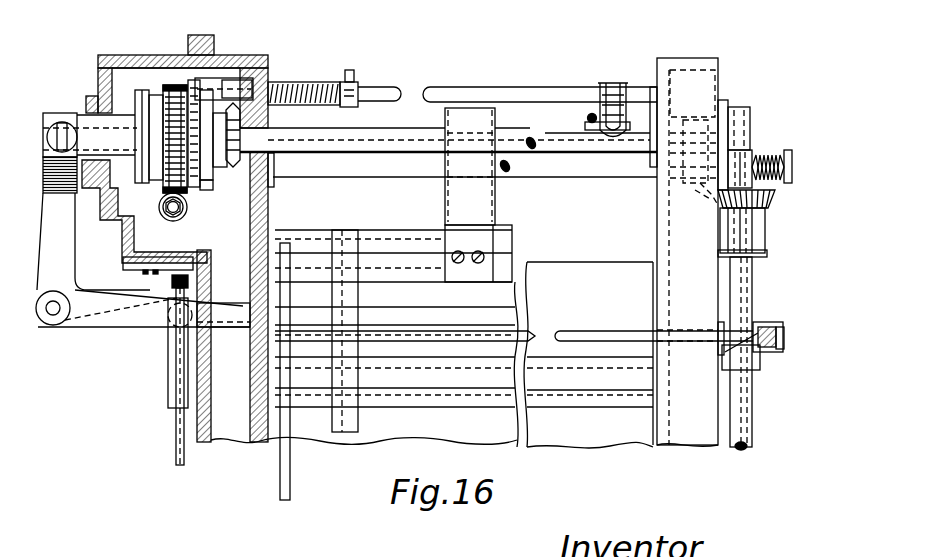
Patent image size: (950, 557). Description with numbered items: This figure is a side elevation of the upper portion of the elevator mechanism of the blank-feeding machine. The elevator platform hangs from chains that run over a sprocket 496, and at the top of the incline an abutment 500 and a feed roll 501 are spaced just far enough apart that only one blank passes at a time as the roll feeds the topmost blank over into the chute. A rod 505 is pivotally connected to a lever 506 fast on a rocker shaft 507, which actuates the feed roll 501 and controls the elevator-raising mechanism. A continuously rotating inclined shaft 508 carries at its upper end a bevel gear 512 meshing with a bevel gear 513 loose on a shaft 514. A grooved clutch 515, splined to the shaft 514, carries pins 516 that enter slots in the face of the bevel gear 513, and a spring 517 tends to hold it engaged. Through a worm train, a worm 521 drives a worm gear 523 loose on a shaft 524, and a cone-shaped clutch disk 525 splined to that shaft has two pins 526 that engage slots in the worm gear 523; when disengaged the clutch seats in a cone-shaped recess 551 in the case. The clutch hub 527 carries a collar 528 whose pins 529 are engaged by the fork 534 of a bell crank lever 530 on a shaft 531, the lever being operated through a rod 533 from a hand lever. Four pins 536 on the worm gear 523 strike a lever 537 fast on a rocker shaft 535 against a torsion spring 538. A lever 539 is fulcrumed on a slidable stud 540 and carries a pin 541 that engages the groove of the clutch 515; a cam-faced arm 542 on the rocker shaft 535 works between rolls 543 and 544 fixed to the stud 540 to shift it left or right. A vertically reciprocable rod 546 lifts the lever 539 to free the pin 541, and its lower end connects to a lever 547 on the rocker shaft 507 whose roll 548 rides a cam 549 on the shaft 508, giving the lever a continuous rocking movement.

The sprocket 496 is at (235, 168).
The abutment 500 is at (497, 236).
The feed roll 501 is at (495, 194).
The rod 505 is at (176, 438).
The lever 506 is at (150, 298).
The rocker shaft 507 is at (537, 331).
The shaft 508 is at (752, 418).
The bevel gear 512 is at (765, 216).
The bevel gear 513 is at (710, 208).
The shaft 514 is at (600, 179).
The clutch 515 is at (766, 160).
The pins 516 is at (698, 186).
The spring 517 is at (771, 198).
The worm 521 is at (171, 222).
The worm gear 523 is at (188, 82).
The shaft 524 is at (427, 128).
The clutch disk 525 is at (140, 90).
The pins 526 is at (172, 86).
The hub 527 is at (77, 113).
The collar 528 is at (62, 120).
The pins 529 is at (78, 137).
The bell crank lever 530 is at (68, 269).
The shaft 531 is at (50, 312).
The rod 533 is at (168, 379).
The fork 534 is at (46, 130).
The rocker shaft 535 is at (496, 87).
The pins 536 is at (206, 185).
The lever 537 is at (215, 85).
The torsion spring 538 is at (298, 83).
The lever 539 is at (740, 107).
The stud 540 is at (650, 125).
The pin 541 is at (752, 160).
The cam-faced arm 542 is at (608, 83).
The roll 543 is at (587, 118).
The roll 544 is at (615, 131).
The rod 546 is at (740, 284).
The lever 547 is at (779, 350).
The roll 548 is at (760, 322).
The cam 549 is at (722, 360).
The cone-shaped recess 551 is at (94, 198).